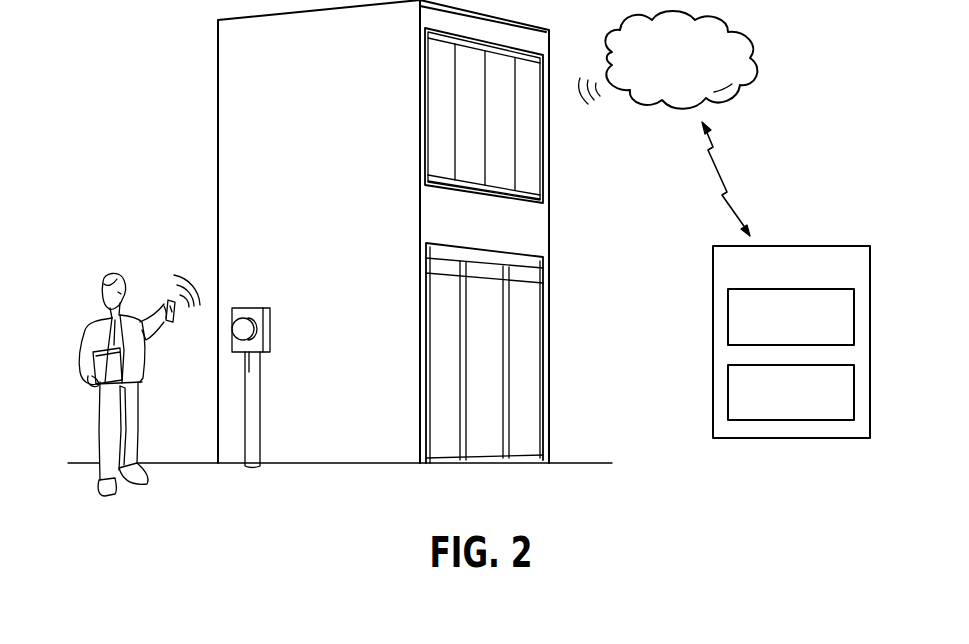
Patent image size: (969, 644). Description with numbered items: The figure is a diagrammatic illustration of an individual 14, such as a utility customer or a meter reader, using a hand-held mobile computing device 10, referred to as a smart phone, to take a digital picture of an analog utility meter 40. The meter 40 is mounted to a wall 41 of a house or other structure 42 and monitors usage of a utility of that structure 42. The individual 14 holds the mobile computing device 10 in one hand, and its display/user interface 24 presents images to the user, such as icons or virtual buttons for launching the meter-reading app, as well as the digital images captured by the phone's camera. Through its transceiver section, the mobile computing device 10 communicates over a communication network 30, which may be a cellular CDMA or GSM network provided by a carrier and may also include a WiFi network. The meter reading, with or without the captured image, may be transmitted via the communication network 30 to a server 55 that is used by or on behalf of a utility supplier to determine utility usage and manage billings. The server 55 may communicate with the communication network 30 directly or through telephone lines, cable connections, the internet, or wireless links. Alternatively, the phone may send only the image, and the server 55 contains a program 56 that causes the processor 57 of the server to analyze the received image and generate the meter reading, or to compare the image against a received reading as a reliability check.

The mobile computing device 10 is at (165, 300).
The individual 14 is at (78, 321).
The display/user interface 24 is at (178, 317).
The communication network 30 is at (732, 27).
The analog utility meter 40 is at (249, 304).
The wall 41 is at (303, 203).
The structure 42 is at (217, 180).
The server 55 is at (813, 326).
The program 56 is at (854, 316).
The processor 57 is at (854, 392).